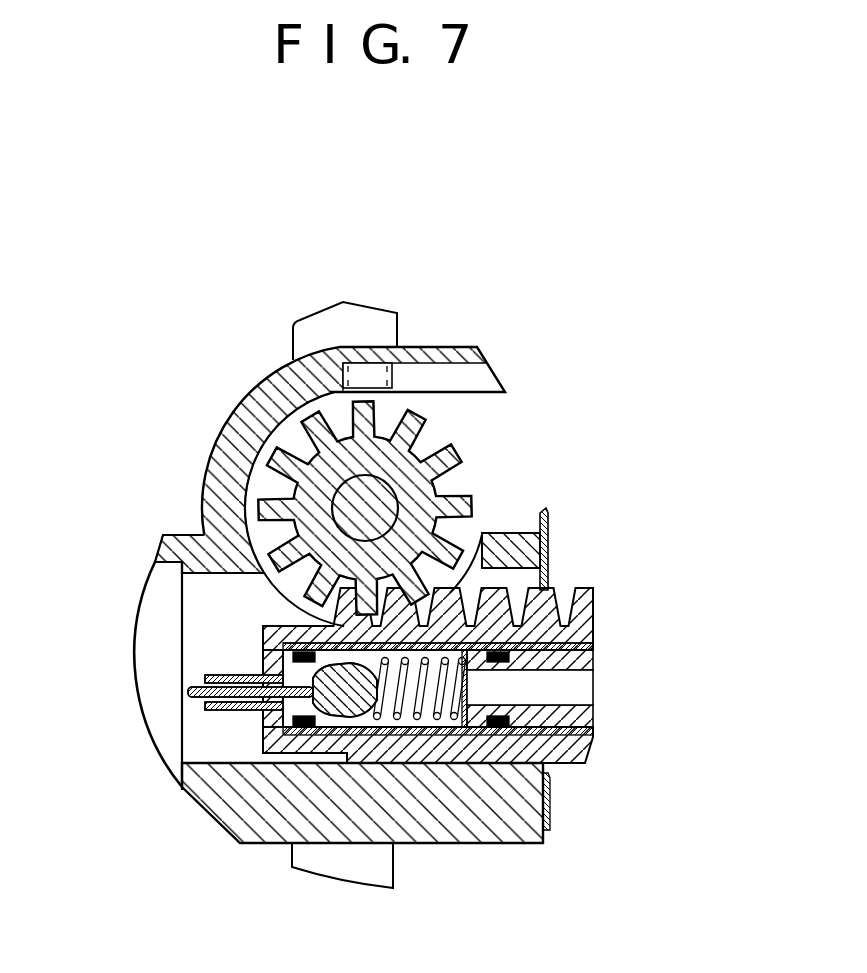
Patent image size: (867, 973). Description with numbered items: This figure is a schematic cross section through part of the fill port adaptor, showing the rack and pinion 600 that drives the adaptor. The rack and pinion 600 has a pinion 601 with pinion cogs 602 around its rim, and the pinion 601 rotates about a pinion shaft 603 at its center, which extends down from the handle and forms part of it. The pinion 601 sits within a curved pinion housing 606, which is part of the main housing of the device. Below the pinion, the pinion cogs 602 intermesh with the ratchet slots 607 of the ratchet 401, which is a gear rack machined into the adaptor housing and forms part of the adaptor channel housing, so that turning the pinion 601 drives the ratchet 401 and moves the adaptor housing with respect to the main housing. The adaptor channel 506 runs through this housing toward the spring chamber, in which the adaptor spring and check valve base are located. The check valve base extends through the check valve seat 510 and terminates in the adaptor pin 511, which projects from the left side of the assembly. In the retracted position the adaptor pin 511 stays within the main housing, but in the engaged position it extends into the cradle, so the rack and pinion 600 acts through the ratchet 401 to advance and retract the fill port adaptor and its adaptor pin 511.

The rack and pinion 600 is at (614, 399).
The pinion 601 is at (418, 483).
The pinion cogs 602 is at (427, 421).
The pinion shaft 603 is at (477, 503).
The pinion housing 606 is at (237, 407).
The ratchet slots 607 is at (571, 598).
The ratchet 401 is at (597, 627).
The adaptor channel 506 is at (568, 687).
The check valve seat 510 is at (467, 742).
The adaptor pin 511 is at (190, 692).